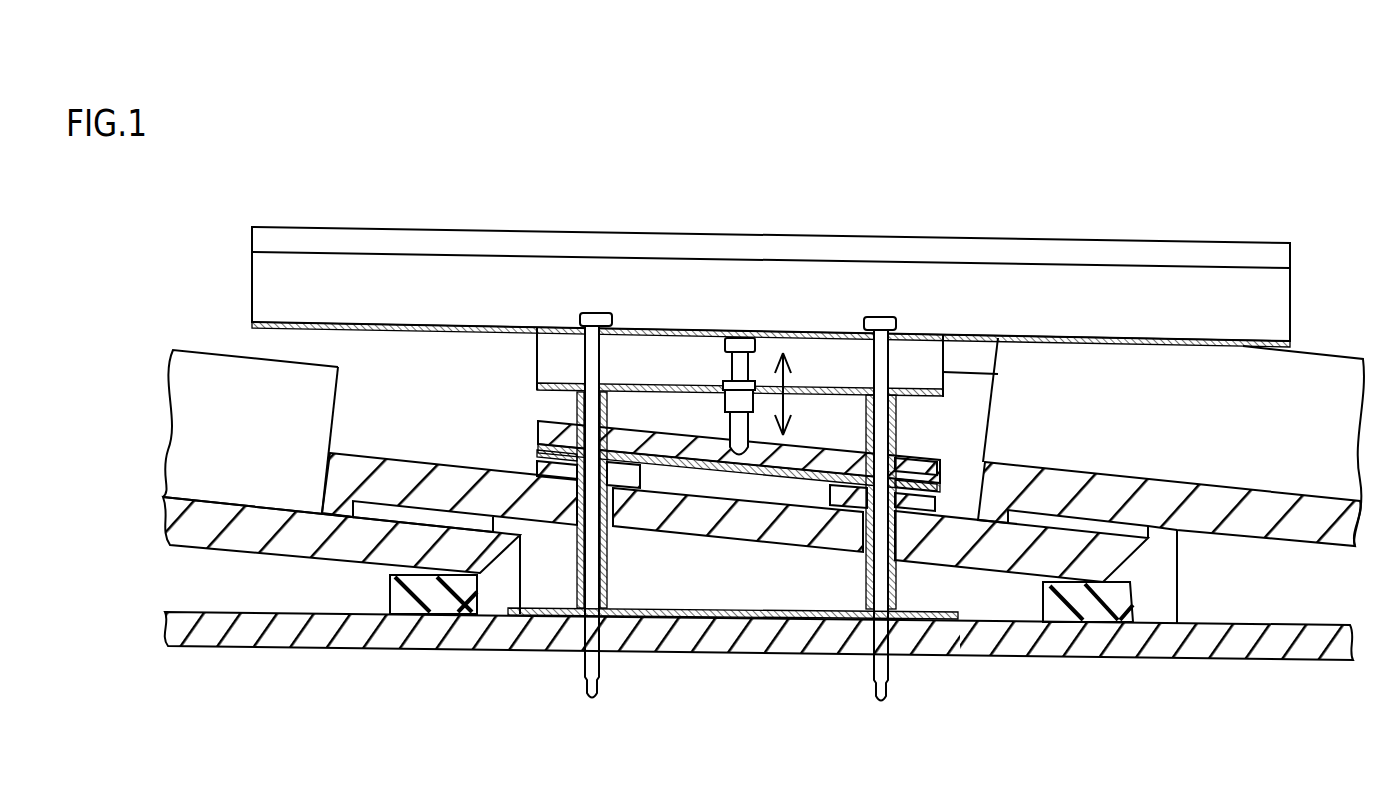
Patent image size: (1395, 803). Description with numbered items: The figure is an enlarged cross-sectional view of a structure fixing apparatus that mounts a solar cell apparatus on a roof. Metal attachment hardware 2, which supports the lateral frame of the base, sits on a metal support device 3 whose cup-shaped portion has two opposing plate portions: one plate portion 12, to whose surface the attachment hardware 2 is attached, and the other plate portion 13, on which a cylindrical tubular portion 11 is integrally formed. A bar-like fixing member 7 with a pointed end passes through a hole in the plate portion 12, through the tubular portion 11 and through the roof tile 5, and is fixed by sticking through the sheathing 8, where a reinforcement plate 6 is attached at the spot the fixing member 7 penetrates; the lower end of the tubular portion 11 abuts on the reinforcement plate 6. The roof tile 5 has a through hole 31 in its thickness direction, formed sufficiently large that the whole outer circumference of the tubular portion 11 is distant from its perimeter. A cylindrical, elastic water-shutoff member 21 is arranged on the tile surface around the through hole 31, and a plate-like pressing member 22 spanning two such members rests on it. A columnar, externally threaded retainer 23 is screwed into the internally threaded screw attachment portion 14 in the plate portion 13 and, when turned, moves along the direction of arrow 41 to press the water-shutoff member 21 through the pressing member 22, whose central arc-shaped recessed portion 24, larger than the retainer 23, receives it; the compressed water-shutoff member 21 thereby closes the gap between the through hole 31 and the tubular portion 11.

The attachment hardware 2 is at (1105, 253).
The support device 3 is at (925, 360).
The roof tile 5 is at (215, 377).
The reinforcement plate 6 is at (942, 622).
The fixing member 7 is at (595, 318).
The sheathing 8 is at (353, 630).
The tubular portion 11 is at (607, 575).
The one plate portion 12 is at (555, 326).
The other plate portion 13 is at (538, 383).
The screw attachment portion 14 is at (726, 401).
The water-shutoff member 21 is at (537, 457).
The pressing member 22 is at (940, 463).
The retainer 23 is at (733, 362).
The recessed portion 24 is at (721, 463).
The through hole 31 is at (572, 500).
The arrow 41 is at (787, 383).